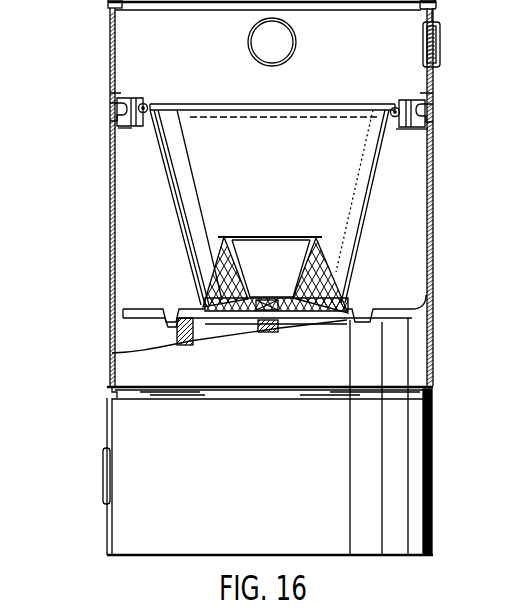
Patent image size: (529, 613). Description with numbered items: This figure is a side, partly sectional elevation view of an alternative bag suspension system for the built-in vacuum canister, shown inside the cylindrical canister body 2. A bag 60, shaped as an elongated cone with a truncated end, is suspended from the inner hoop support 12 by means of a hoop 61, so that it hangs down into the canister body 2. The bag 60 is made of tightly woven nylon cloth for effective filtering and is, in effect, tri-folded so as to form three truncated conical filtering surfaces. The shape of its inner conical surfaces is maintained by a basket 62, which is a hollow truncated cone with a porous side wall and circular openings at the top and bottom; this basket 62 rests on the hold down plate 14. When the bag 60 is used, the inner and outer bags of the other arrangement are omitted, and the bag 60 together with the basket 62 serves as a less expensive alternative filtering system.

The canister body 2 is at (110, 220).
The inner hoop support 12 is at (133, 98).
The hold down plate 14 is at (371, 314).
The bag 60 is at (368, 200).
The hoop 61 is at (147, 105).
The basket 62 is at (200, 306).